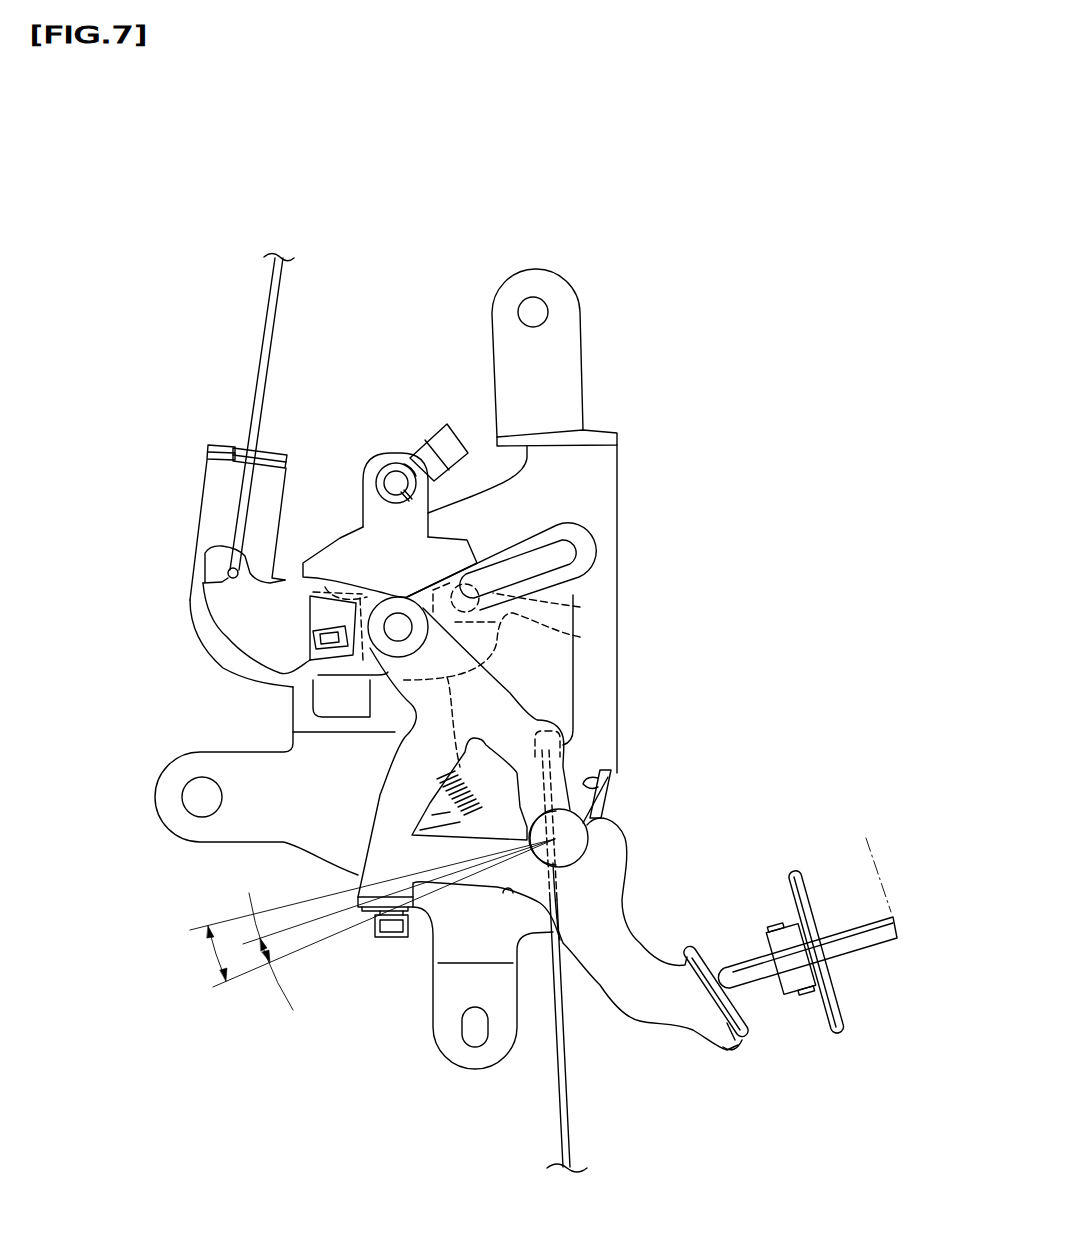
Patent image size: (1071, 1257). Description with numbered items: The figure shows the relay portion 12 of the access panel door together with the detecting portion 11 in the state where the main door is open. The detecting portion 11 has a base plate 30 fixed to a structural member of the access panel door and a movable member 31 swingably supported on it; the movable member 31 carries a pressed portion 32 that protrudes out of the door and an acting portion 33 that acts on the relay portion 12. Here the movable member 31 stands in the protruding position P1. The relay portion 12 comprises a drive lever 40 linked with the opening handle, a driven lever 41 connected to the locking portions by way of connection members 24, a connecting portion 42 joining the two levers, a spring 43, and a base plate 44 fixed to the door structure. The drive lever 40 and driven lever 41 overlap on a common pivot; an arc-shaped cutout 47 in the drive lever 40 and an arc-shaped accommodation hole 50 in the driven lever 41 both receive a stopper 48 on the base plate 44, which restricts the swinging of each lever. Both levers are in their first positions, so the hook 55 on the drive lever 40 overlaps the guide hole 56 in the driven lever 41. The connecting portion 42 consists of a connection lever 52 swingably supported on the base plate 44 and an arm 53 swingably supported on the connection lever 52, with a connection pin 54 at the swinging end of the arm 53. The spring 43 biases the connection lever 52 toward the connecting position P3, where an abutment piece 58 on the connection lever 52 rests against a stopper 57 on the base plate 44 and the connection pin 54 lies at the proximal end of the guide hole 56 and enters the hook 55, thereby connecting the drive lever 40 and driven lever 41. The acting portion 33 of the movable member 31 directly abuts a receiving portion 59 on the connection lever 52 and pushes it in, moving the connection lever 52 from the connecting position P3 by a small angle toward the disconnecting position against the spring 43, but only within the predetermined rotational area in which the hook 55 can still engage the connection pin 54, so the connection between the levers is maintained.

The detecting portion 11 is at (834, 933).
The relay portion 12 is at (188, 425).
The connection members 24 is at (265, 325).
The base plate 30 is at (840, 1032).
The movable member 31 is at (841, 958).
The pressed portion 32 is at (897, 932).
The acting portion 33 is at (722, 970).
The drive lever 40 is at (353, 547).
The driven lever 41 is at (233, 608).
The connecting portion 42 is at (633, 899).
The spring 43 is at (615, 783).
The base plate 44 is at (605, 470).
The cutout 47 is at (325, 587).
The stopper 48 is at (307, 647).
The accommodation hole 50 is at (308, 632).
The connection lever 52 is at (387, 792).
The arm 53 is at (482, 592).
The connection pin 54 is at (580, 607).
The hook 55 is at (580, 637).
The guide hole 56 is at (567, 550).
The stopper 57 is at (383, 940).
The abutment piece 58 is at (390, 903).
The receiving portion 59 is at (727, 1040).
The protruding position P1 is at (872, 863).
The connecting position P3 is at (369, 923).